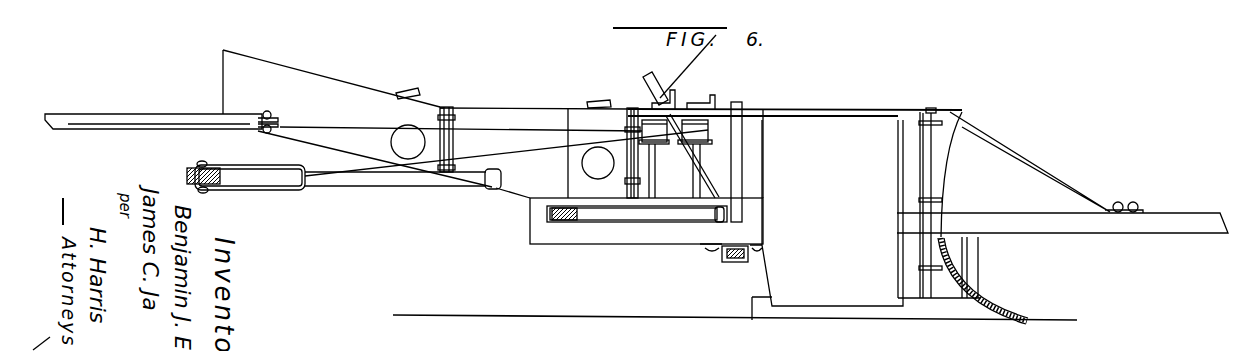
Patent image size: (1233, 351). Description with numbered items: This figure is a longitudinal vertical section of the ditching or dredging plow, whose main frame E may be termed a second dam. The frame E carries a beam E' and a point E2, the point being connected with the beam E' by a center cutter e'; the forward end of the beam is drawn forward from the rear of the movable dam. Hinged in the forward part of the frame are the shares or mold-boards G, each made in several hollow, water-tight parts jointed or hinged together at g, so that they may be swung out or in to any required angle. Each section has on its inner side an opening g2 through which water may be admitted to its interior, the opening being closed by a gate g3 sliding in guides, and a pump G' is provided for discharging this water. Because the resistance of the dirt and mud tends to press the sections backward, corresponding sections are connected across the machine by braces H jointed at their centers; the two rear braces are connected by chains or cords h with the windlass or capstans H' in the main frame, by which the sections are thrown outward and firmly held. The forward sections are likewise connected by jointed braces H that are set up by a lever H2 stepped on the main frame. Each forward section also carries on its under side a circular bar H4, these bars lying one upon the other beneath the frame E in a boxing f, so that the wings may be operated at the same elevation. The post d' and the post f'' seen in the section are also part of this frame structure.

The jointed braces H is at (404, 170).
The chains or cords h is at (494, 144).
The shares or mold-boards G is at (535, 100).
The pump G' is at (400, 87).
The joints or hinges of the share sections g is at (539, 144).
The opening g2 is at (502, 152).
The gate g3 is at (503, 93).
The main frame E is at (885, 207).
The windlass or capstans H' is at (677, 135).
The lever H2 is at (692, 156).
The post f'' is at (743, 162).
The circular bar H4 is at (714, 278).
The boxing f is at (748, 263).
The upright post d' is at (939, 203).
The beam E' is at (1062, 218).
The center cutter e' is at (979, 267).
The point E2 is at (983, 281).